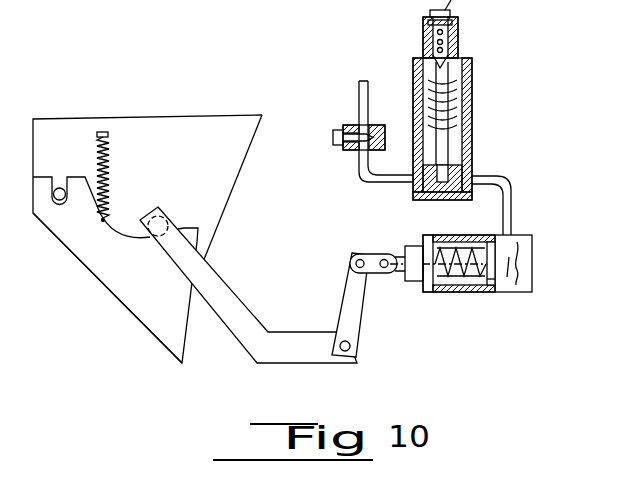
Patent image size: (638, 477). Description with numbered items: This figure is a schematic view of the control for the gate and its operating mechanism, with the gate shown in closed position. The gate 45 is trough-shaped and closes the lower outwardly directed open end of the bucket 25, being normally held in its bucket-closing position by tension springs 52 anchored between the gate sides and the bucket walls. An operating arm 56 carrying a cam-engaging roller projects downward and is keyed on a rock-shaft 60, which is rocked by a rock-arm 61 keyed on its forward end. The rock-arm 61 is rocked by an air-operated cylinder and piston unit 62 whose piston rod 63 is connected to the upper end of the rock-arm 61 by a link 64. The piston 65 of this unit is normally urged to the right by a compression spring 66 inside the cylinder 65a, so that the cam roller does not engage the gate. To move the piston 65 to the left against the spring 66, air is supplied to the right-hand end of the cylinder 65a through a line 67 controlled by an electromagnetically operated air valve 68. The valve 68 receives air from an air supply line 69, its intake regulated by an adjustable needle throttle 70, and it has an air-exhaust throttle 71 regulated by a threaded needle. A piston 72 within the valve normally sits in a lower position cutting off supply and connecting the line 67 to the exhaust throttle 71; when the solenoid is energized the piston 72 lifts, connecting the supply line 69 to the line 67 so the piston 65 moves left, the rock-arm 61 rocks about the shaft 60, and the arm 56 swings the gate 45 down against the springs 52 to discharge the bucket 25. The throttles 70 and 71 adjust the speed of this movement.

The bucket 25 is at (100, 117).
The gate 45 is at (136, 305).
The tension springs 52 is at (108, 167).
The operating arm 56 is at (243, 343).
The rock-shaft 60 is at (351, 346).
The rock-arm 61 is at (346, 297).
The air-operated cylinder and piston unit 62 is at (536, 243).
The piston rod 63 is at (398, 254).
The link 64 is at (373, 260).
The piston 65 is at (496, 278).
The cylinder 65a is at (483, 292).
The compression spring 66 is at (447, 277).
The line 67 is at (513, 203).
The electromagnetically operated air valve 68 is at (474, 62).
The air supply line 69 is at (359, 88).
The throttle 70 is at (349, 127).
The air-exhaust throttle 71 is at (432, 35).
The piston 72 is at (419, 188).